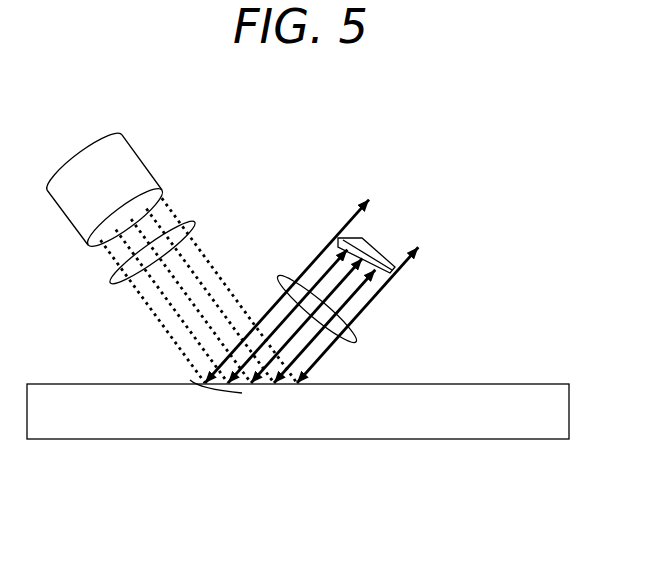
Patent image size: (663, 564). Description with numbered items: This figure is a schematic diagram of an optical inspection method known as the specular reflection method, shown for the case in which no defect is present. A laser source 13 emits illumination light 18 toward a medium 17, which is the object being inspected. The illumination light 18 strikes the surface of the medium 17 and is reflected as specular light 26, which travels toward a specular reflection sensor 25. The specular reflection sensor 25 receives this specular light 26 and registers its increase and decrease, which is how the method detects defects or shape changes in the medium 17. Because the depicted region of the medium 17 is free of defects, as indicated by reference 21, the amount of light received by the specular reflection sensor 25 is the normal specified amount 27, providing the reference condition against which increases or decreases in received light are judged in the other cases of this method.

The laser source 13 is at (127, 157).
The illumination light 18 is at (113, 277).
The defect-free region of the medium 21 is at (190, 380).
The medium 17 is at (310, 427).
The specular reflection sensor 25 is at (370, 250).
The specular light 26 is at (350, 343).
The specified amount of received light 27 is at (418, 250).